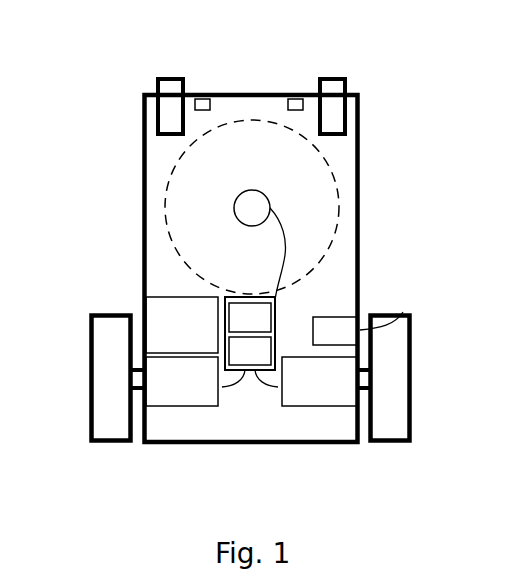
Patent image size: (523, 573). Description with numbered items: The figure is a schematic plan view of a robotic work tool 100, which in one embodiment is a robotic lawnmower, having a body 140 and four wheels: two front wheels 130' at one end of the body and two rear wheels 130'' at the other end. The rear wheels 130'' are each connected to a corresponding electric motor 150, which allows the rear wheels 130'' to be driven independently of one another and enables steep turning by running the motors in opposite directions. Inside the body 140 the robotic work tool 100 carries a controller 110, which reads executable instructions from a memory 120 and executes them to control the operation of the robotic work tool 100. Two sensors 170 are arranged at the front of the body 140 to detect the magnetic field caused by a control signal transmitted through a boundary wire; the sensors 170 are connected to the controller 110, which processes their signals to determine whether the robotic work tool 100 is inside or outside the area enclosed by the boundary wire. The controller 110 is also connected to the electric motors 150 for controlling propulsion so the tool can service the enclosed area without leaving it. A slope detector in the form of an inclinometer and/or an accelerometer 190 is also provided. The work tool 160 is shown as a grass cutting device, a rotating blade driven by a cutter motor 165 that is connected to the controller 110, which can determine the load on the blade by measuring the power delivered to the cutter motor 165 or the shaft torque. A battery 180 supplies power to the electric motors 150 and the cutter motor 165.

The robotic work tool 100 is at (135, 130).
The controller 110 is at (277, 317).
The memory 120 is at (273, 352).
The front wheels 130' is at (300, 127).
The rear wheels 130'' is at (218, 417).
The body 140 is at (163, 445).
The electric motor 150 is at (288, 390).
The work tool 160 is at (173, 240).
The cutter motor 165 is at (236, 211).
The sensor 170 is at (278, 97).
The battery 180 is at (160, 317).
The accelerometer 190 is at (403, 312).